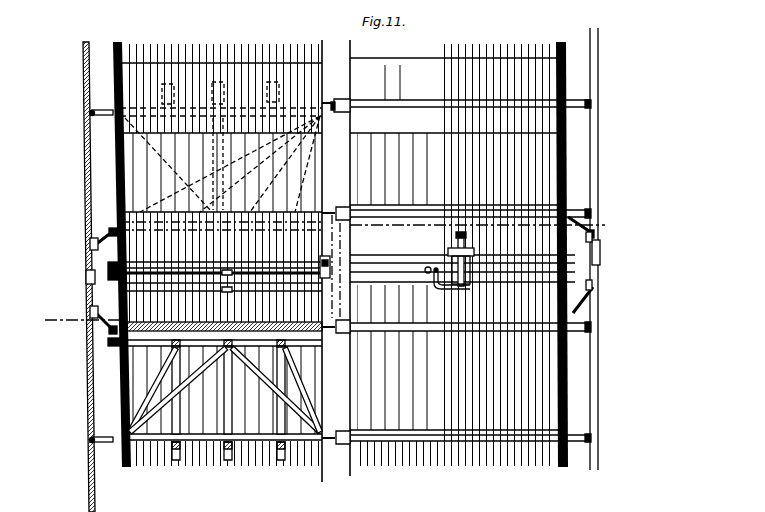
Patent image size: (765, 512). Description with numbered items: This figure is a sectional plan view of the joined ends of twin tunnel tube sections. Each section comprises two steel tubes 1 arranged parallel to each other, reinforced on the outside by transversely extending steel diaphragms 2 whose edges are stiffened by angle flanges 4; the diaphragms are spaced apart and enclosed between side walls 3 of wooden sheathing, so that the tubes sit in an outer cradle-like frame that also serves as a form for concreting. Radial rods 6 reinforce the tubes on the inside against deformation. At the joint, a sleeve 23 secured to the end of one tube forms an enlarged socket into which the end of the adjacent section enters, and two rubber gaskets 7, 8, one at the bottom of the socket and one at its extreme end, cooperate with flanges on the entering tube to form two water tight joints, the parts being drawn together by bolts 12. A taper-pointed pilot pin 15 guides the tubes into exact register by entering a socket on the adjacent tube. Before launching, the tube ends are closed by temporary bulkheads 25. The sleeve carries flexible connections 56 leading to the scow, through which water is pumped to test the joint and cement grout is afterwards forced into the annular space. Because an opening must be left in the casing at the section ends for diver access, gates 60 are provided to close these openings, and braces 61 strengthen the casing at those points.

The tube 1 is at (207, 50).
The diaphragm 2 is at (90, 112).
The side wall 3 is at (86, 392).
The angle flange 4 is at (592, 108).
The radial rod 6 is at (246, 280).
The rubber gasket 7 is at (217, 467).
The rubber gasket 8 is at (339, 100).
The bolt 12 is at (666, 218).
The pilot pin 15 is at (600, 244).
The sleeve 23 is at (110, 270).
The temporary bulkhead 25 is at (253, 320).
The flexible connection 56 is at (434, 280).
The gate 60 is at (86, 278).
The brace 61 is at (100, 238).